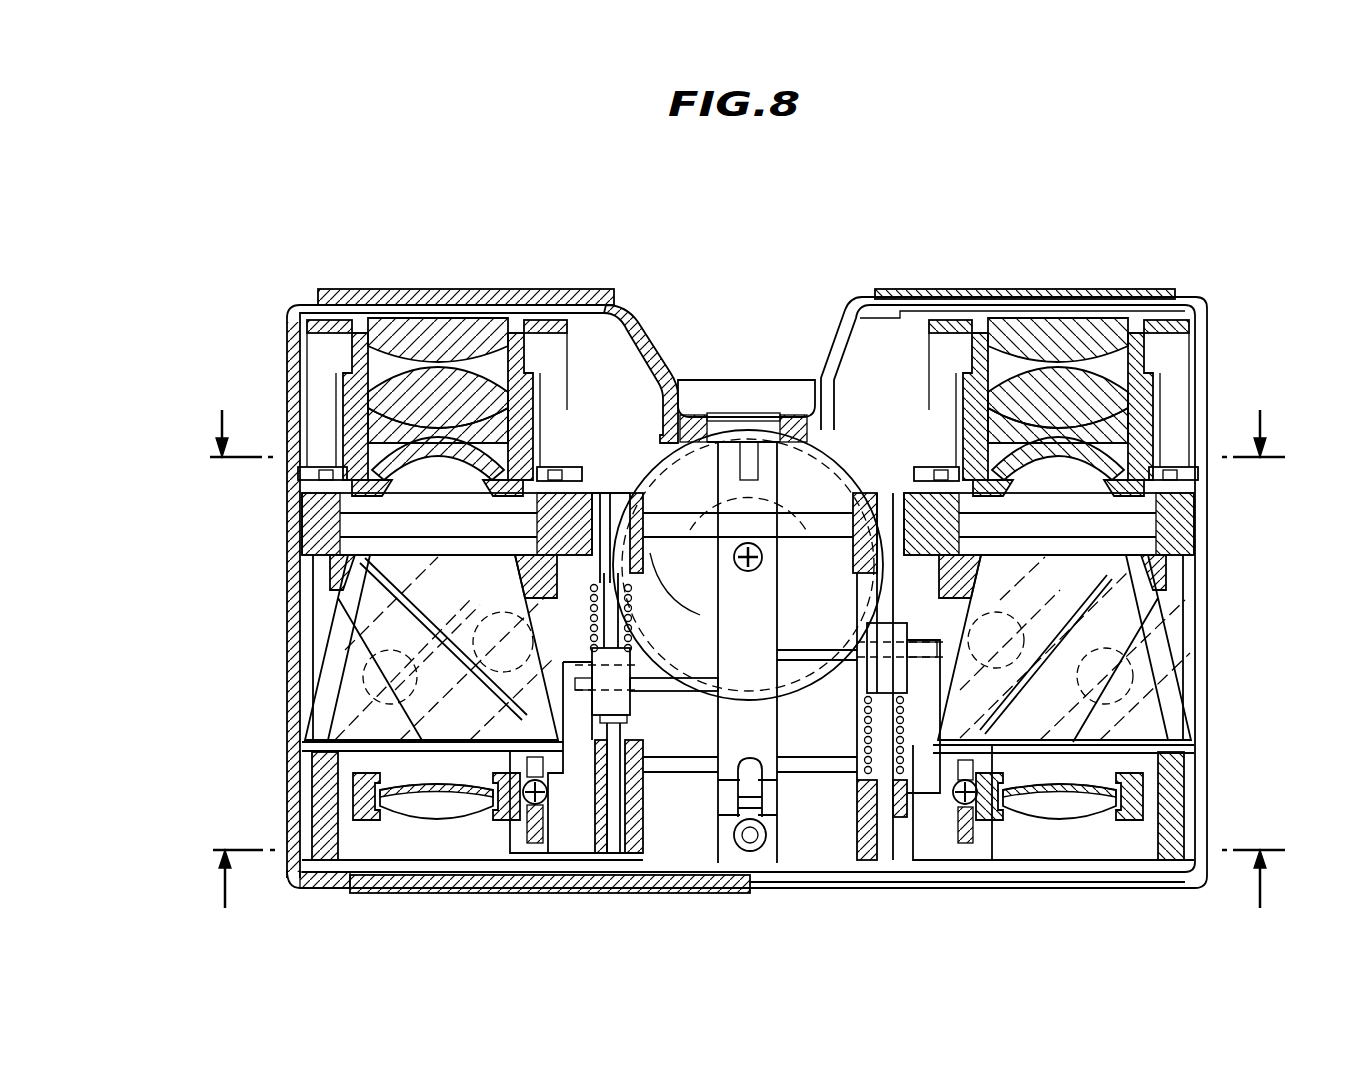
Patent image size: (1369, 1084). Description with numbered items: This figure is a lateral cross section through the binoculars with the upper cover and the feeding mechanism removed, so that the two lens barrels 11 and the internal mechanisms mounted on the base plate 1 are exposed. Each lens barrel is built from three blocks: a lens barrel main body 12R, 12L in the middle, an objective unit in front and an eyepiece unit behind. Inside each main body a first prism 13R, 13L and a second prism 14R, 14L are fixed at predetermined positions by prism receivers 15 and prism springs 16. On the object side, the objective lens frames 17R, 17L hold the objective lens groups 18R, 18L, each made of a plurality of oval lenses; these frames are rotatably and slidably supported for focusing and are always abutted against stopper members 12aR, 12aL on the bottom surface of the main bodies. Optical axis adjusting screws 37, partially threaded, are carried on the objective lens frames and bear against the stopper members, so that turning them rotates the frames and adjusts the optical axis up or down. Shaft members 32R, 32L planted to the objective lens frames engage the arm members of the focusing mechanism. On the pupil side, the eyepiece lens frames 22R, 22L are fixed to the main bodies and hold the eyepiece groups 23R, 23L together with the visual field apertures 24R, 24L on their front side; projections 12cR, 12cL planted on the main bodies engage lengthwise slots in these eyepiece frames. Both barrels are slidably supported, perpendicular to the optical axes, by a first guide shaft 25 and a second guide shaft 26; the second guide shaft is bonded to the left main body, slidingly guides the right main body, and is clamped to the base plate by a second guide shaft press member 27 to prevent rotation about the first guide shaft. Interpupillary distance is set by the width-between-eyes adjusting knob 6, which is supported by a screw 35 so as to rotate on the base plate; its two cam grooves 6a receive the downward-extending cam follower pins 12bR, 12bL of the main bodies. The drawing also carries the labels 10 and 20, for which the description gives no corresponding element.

The base plate 1 is at (1197, 335).
The width-between-eyes adjusting knob 6 is at (835, 475).
The cam groove 6a is at (715, 548).
The section line X-X 10 is at (742, 431).
The lens barrel 11 is at (744, 902).
The right lens barrel main body 12R is at (325, 800).
The left lens barrel main body 12L is at (1170, 795).
The right stopper member 12aR is at (560, 892).
The left stopper member 12aL is at (960, 880).
The right cam follower pin 12bR is at (652, 518).
The left cam follower pin 12bL is at (830, 555).
The right projection 12cR is at (327, 472).
The left projection 12cL is at (940, 470).
The right first prism 13R is at (327, 693).
The left first prism 13L is at (1150, 700).
The right second prism 14R is at (417, 583).
The left second prism 14L is at (1150, 545).
The prism receiver 15 is at (335, 570).
The prism spring 16 is at (332, 752).
The right objective lens frame 17R is at (365, 830).
The left objective lens frame 17L is at (1145, 820).
The right objective lens group 18R is at (437, 822).
The left objective lens group 18L is at (1060, 820).
The slide member 20 is at (615, 520).
The right eyepiece lens frame 22R is at (317, 323).
The left eyepiece lens frame 22L is at (1163, 322).
The right eyepiece group 23R is at (437, 387).
The left eyepiece group 23L is at (1057, 390).
The right visual field aperture 24R is at (375, 515).
The left visual field aperture 24L is at (1160, 500).
The first guide shaft 25 is at (790, 540).
The second guide shaft 26 is at (760, 800).
The second guide shaft press member 27 is at (708, 862).
The right shaft member 32R is at (650, 690).
The left shaft member 32L is at (840, 692).
The screw 35 is at (742, 579).
The optical axis adjusting screw 37 is at (535, 805).